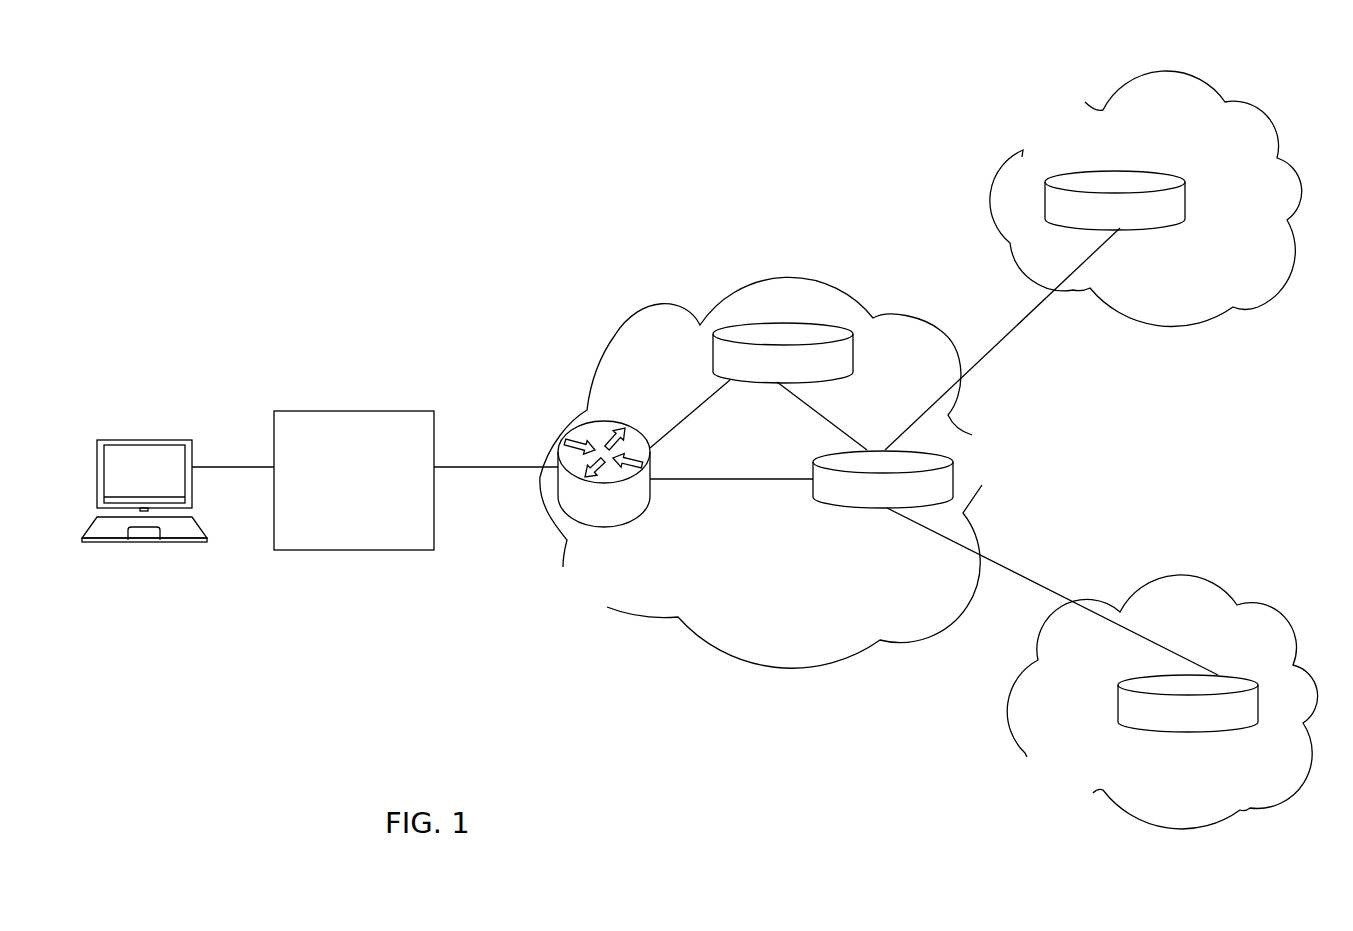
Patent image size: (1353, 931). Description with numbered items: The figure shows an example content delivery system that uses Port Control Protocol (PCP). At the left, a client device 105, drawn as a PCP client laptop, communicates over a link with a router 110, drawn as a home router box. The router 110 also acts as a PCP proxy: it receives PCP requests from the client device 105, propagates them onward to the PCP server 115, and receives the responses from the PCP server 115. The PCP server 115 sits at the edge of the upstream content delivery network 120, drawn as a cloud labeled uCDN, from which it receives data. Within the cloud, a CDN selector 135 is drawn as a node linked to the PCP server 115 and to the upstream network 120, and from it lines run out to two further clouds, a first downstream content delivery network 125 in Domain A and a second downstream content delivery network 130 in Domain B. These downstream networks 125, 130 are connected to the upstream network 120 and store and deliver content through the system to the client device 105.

The client device 105 is at (138, 545).
The router 110 is at (348, 550).
The PCP server 115 is at (585, 432).
The upstream content delivery network 120 is at (788, 323).
The downstream content delivery network 125 is at (1185, 182).
The downstream content delivery network 130 is at (1258, 685).
The CDN selector 135 is at (953, 498).